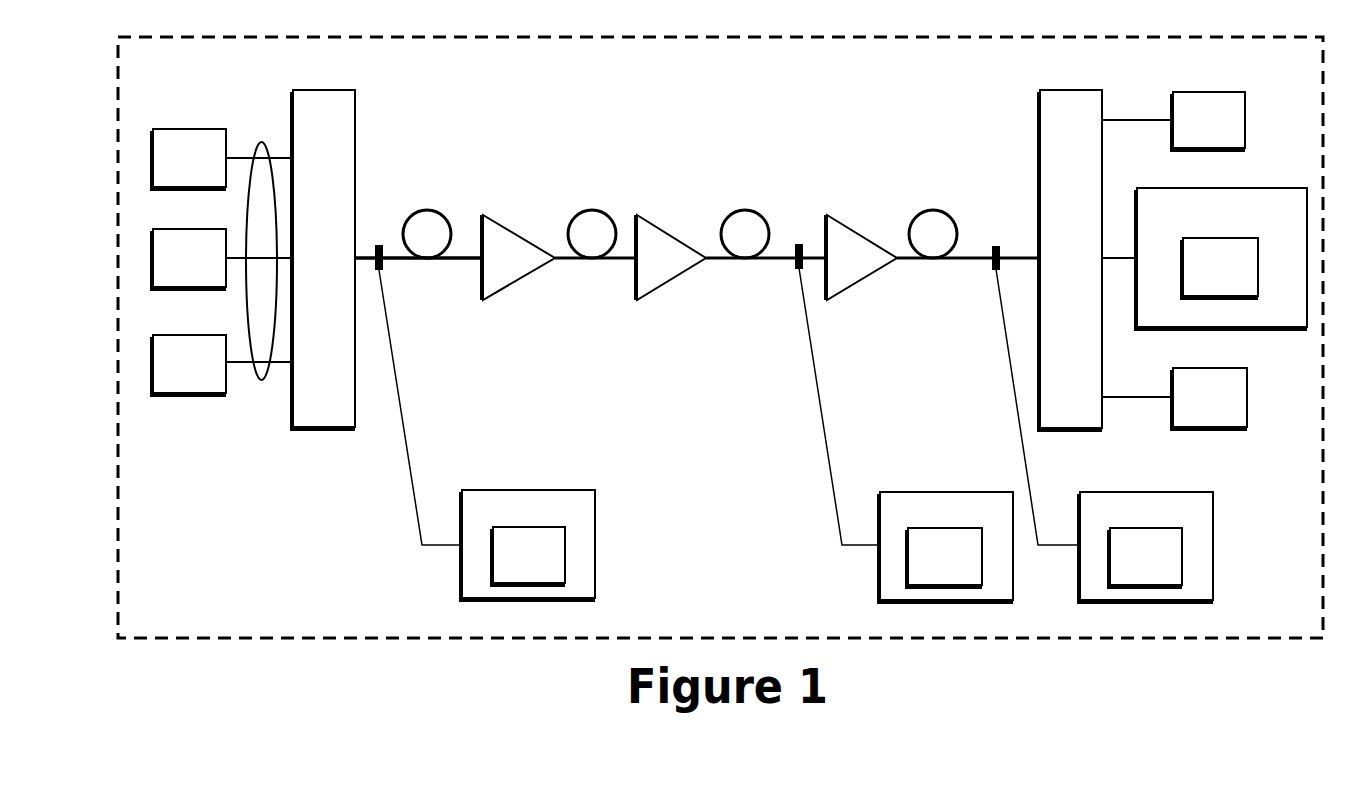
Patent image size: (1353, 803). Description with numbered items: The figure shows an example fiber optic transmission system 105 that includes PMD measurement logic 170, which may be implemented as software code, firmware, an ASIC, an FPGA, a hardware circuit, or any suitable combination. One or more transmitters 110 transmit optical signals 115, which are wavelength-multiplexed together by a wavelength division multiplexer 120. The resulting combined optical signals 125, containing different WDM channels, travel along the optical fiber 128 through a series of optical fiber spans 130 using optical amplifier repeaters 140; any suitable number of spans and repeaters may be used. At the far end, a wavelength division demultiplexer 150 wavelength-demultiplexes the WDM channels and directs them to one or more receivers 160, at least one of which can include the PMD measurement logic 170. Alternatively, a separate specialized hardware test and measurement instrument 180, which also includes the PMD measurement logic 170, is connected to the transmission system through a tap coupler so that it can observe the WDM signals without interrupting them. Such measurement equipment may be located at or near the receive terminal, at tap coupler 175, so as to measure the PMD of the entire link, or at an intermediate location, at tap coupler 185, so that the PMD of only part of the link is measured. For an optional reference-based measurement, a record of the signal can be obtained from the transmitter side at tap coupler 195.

The fiber optic transmission system 105 is at (720, 337).
The transmitter 110 is at (222, 262).
The optical signals 115 is at (262, 142).
The wavelength division multiplexer 120 is at (323, 259).
The combined optical signals 125 is at (472, 258).
The optical fiber 128 is at (460, 258).
The optical fiber spans 130 is at (680, 249).
The optical amplifier repeaters 140 is at (689, 257).
The wavelength division demultiplexer 150 is at (1106, 260).
The receiver 160 is at (1221, 260).
The PMD measurement logic 170 is at (875, 412).
The tap coupler 175 is at (996, 216).
The hardware test and measurement instrument 180 is at (837, 546).
The tap coupler 185 is at (799, 216).
The tap coupler 195 is at (379, 216).